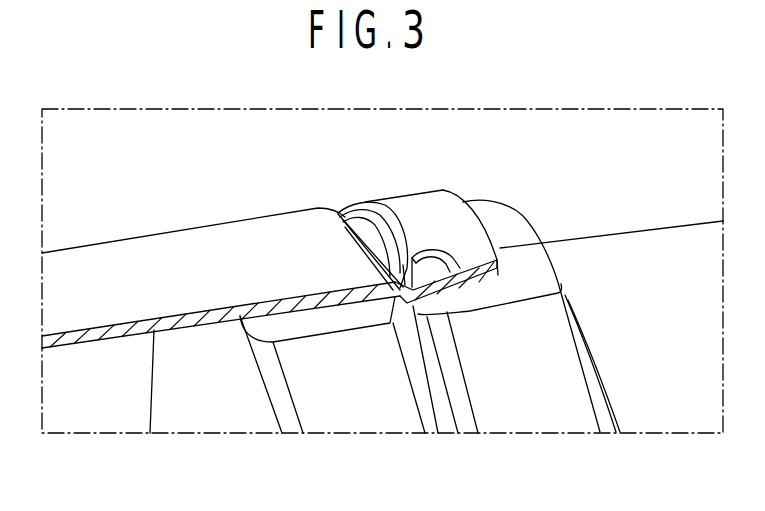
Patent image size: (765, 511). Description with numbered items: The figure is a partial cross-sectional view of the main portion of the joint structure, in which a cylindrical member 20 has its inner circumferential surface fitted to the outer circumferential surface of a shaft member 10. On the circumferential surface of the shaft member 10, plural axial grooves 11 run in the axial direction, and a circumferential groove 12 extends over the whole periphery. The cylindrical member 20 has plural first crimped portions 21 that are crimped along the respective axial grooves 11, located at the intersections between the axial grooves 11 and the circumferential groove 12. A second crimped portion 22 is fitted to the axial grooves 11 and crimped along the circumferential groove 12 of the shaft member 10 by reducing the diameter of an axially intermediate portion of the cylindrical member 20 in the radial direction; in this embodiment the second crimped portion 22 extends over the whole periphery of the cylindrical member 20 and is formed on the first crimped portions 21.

The shaft member 10 is at (658, 243).
The axial grooves 11 is at (317, 317).
The circumferential groove 12 is at (440, 397).
The cylindrical member 20 is at (155, 243).
The first crimped portions 21 is at (432, 245).
The second crimped portion 22 is at (337, 204).